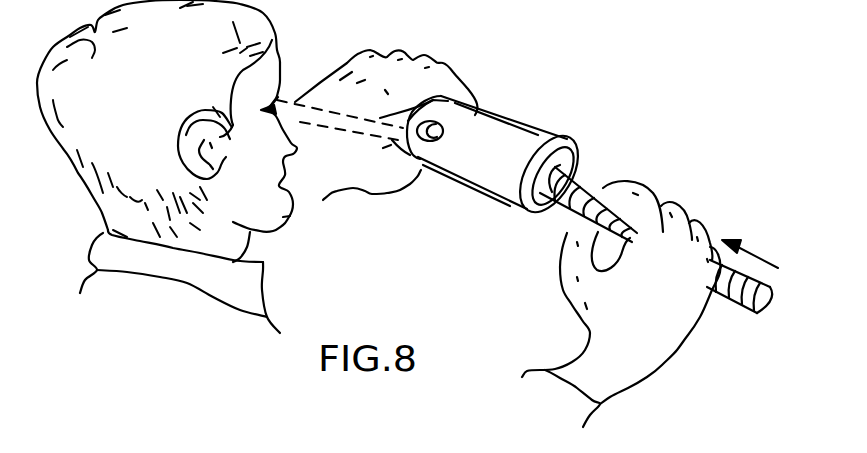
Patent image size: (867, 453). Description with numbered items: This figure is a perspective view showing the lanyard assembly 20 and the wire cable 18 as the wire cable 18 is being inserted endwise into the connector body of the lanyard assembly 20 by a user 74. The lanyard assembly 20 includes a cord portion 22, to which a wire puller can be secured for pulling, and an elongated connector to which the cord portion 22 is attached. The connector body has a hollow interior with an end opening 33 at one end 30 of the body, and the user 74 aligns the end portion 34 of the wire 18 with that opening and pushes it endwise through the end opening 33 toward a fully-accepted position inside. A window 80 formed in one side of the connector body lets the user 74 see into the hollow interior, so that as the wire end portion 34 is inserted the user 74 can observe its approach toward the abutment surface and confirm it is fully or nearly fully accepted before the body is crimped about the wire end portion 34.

The wire cable 18 is at (737, 297).
The lanyard assembly 20 is at (578, 210).
The cord portion 22 is at (500, 120).
The end of connector body 30 is at (562, 193).
The end opening 33 is at (567, 137).
The wire end portion 34 is at (656, 271).
The user 74 is at (100, 207).
The window 80 is at (432, 150).